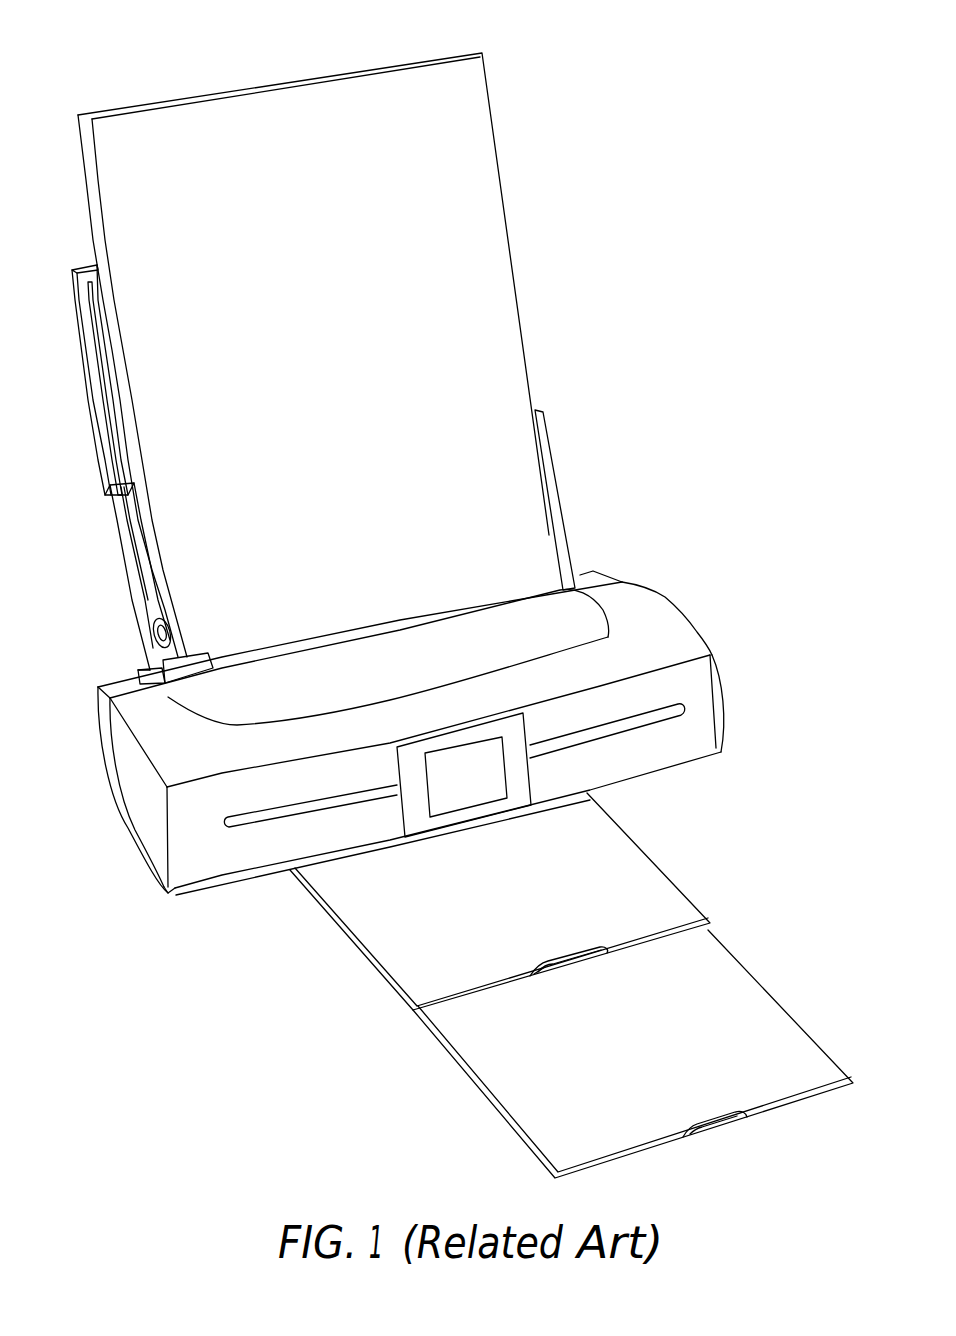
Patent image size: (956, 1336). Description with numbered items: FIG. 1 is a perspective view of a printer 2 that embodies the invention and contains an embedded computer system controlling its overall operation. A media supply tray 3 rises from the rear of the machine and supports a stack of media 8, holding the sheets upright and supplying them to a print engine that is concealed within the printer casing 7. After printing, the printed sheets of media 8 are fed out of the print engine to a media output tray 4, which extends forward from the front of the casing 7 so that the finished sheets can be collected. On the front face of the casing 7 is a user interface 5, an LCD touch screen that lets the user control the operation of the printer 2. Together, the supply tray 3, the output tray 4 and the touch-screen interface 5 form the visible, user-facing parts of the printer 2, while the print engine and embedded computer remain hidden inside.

The printer 2 is at (640, 391).
The media supply tray 3 is at (95, 447).
The media output tray 4 is at (427, 975).
The user interface 5 is at (487, 773).
The printer housing 7 is at (663, 623).
The media 8 is at (482, 262).